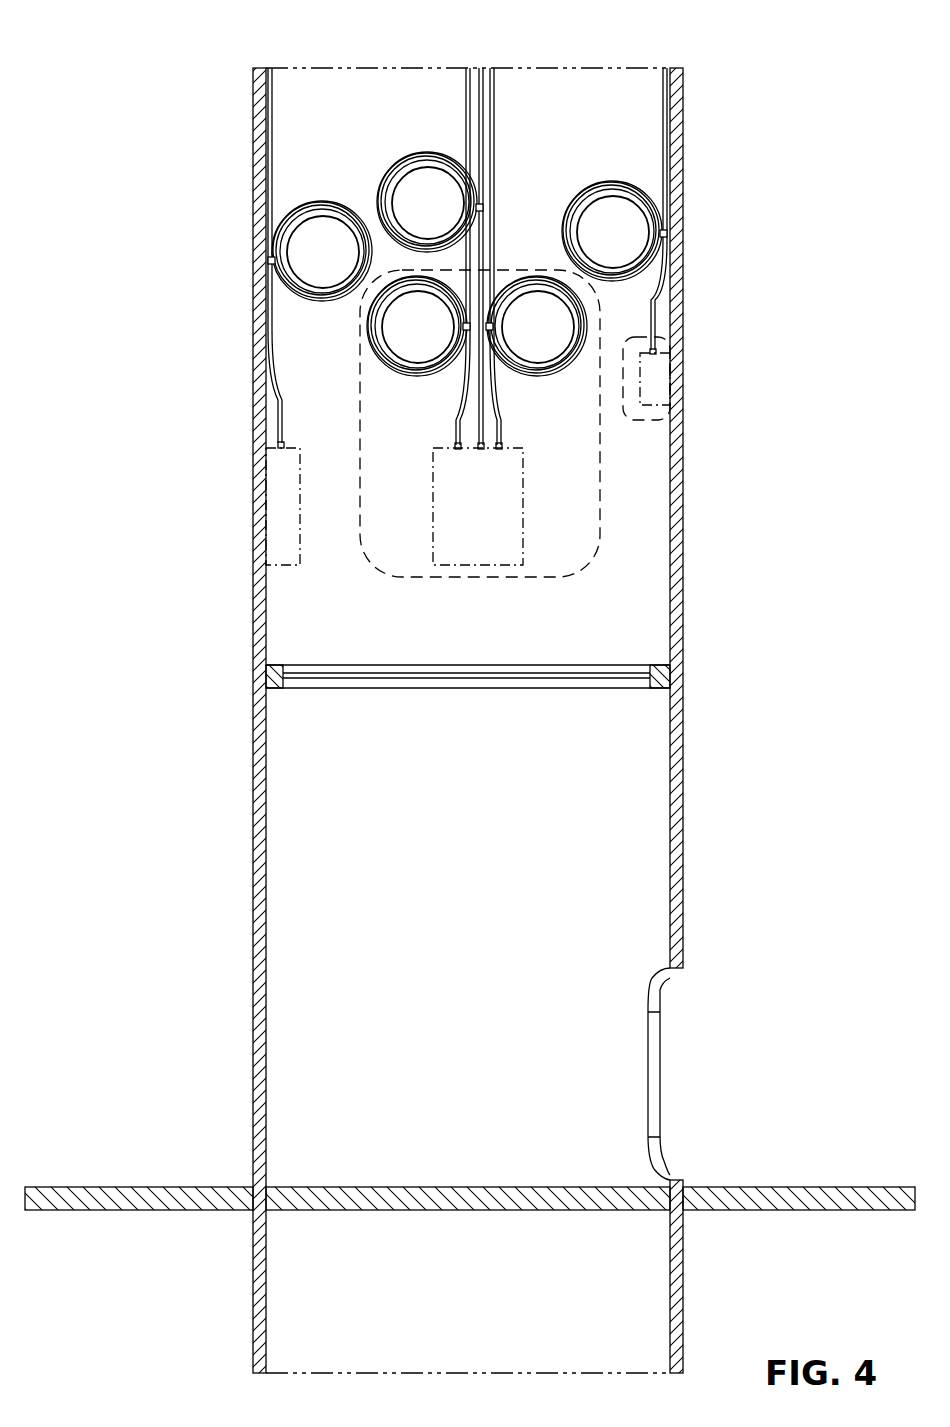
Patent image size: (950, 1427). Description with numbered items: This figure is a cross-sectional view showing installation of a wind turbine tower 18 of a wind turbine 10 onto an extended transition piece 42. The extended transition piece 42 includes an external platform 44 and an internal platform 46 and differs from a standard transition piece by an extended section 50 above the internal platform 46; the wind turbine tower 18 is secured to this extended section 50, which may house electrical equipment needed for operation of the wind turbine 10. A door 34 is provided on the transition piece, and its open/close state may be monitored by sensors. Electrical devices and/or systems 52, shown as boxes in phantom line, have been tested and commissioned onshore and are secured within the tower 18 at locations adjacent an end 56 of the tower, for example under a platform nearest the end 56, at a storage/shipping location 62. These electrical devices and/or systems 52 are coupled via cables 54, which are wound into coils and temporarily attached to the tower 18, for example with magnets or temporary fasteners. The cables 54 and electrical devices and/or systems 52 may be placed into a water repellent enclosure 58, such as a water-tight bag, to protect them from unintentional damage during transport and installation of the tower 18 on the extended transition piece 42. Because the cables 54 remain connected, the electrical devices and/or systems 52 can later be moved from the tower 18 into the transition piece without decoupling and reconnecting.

The wind turbine 10 is at (839, 70).
The wind turbine tower 18 is at (683, 118).
The door 34 is at (660, 1000).
The extended transition piece 42 is at (819, 862).
The external platform 44 is at (802, 1187).
The internal platform 46 is at (471, 1187).
The extended section 50 is at (683, 818).
The electrical devices and/or systems 52 is at (293, 566).
The cables 54 is at (408, 166).
The end 56 is at (683, 625).
The water repellent enclosure 58 is at (625, 415).
The storage/shipping location 62 is at (268, 260).